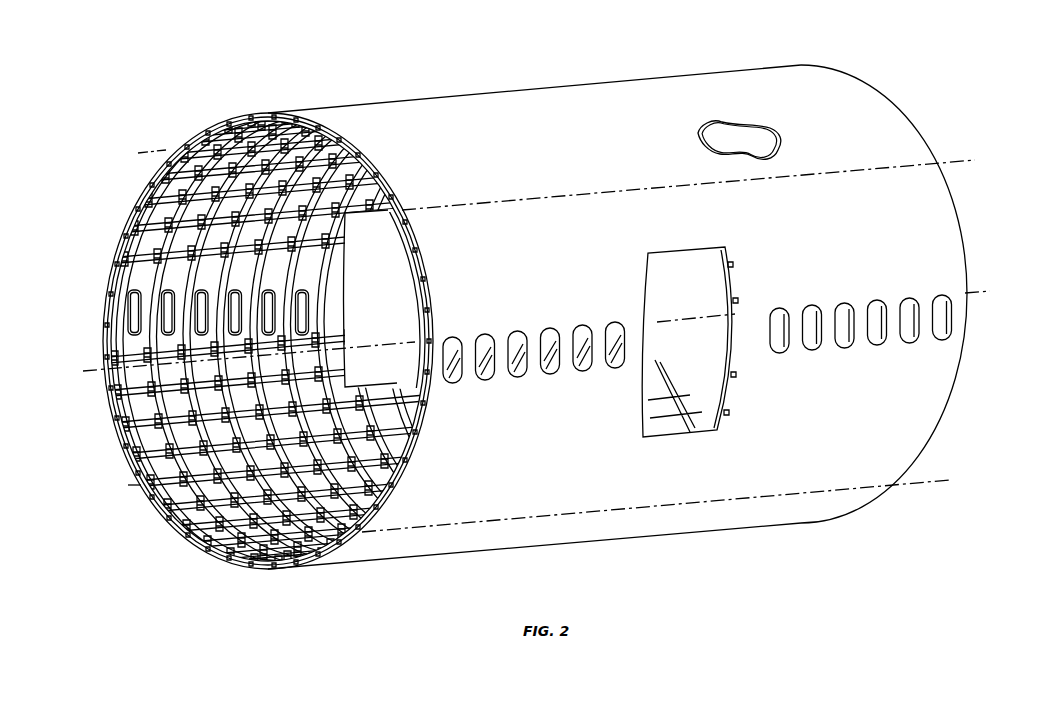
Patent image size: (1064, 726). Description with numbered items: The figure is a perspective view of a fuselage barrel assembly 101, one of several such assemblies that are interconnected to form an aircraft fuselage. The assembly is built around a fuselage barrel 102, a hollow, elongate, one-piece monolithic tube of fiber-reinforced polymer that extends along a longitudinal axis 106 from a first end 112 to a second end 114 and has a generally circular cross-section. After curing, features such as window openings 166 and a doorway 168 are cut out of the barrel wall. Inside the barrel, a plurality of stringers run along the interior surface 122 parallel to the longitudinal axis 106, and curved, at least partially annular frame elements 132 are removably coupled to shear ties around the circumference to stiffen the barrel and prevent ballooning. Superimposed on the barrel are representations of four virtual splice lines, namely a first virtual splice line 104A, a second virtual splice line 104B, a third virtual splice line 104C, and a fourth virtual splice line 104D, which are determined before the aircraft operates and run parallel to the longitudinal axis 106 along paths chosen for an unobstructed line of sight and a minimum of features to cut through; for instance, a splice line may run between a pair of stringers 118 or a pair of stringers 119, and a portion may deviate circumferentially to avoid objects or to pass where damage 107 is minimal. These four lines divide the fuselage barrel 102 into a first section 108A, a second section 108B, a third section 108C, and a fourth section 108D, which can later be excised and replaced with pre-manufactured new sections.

The fuselage barrel assembly 101 is at (263, 585).
The fuselage barrel 102 is at (350, 566).
The first virtual splice line 104A is at (160, 152).
The second virtual splice line 104B is at (961, 160).
The third virtual splice line 104C is at (918, 481).
The fourth virtual splice line 104D is at (134, 487).
The longitudinal axis 106 is at (101, 372).
The damage 107 is at (742, 136).
The first section 108A is at (294, 117).
The second section 108B is at (952, 204).
The third section 108C is at (425, 558).
The fourth section 108D is at (103, 302).
The first end 112 is at (193, 533).
The second end 114 is at (956, 376).
The pair of stringers 118 is at (145, 190).
The pair of stringers 119 is at (188, 498).
The interior surface 122 is at (137, 375).
The frame element 132 is at (250, 135).
The window opening 166 is at (127, 328).
The doorway 168 is at (338, 283).